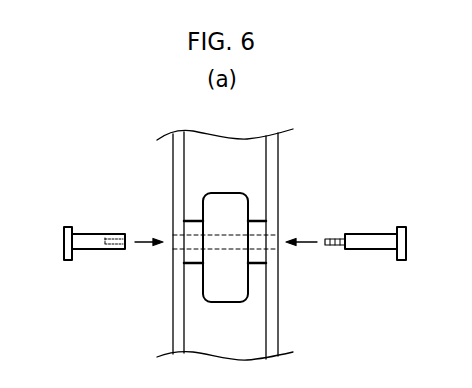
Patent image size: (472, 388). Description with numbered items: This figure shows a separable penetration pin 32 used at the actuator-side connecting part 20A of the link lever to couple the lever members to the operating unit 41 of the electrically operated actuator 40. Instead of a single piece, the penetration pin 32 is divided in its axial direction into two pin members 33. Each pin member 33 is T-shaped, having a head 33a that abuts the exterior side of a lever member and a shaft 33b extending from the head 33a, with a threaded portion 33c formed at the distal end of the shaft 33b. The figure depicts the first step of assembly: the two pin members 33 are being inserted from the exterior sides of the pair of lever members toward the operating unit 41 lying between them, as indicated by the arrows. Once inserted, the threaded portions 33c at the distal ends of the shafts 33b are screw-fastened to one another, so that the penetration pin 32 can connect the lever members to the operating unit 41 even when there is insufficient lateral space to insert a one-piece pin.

The actuator-side connecting part 20A is at (219, 222).
The operating unit 41 is at (241, 190).
The electrically operated actuator 40 is at (225, 247).
The pin member 33 is at (84, 255).
The penetration pin 32 is at (235, 260).
The head 33a is at (64, 226).
The shaft 33b is at (93, 233).
The threaded portion 33c is at (127, 250).